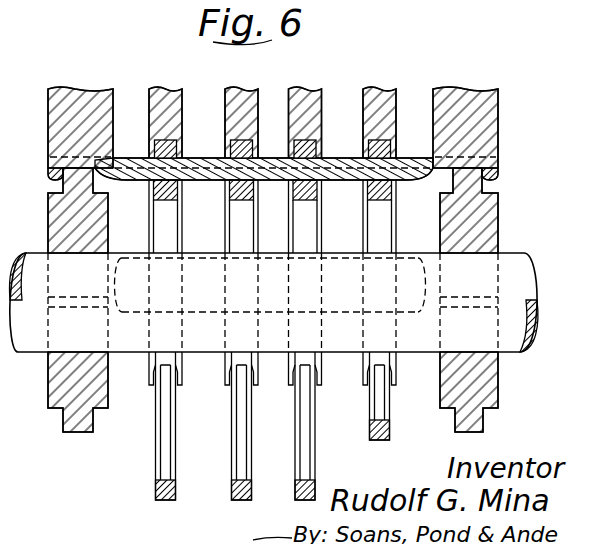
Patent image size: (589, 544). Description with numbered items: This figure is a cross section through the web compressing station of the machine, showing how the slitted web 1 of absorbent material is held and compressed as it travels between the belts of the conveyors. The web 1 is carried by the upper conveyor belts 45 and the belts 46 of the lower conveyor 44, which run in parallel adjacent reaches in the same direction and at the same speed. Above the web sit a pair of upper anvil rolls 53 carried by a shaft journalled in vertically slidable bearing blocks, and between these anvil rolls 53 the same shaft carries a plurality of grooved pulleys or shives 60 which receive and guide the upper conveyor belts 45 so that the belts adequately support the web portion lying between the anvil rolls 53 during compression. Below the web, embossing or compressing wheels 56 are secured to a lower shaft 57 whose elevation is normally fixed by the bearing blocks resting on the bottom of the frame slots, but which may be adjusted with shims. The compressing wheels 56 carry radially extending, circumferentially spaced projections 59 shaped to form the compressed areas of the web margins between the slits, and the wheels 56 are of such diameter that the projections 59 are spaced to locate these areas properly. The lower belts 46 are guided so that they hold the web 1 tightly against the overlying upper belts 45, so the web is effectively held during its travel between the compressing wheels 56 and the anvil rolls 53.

The web 1 is at (280, 181).
The lower conveyor 44 is at (233, 499).
The upper conveyor belts 45 is at (232, 150).
The lower conveyor belts 46 is at (232, 192).
The upper anvil rolls 53 is at (82, 77).
The embossing or compressing wheels 56 is at (490, 228).
The lower shaft 57 is at (32, 252).
The compressing projections 59 is at (62, 180).
The pulleys or shives 60 is at (232, 100).